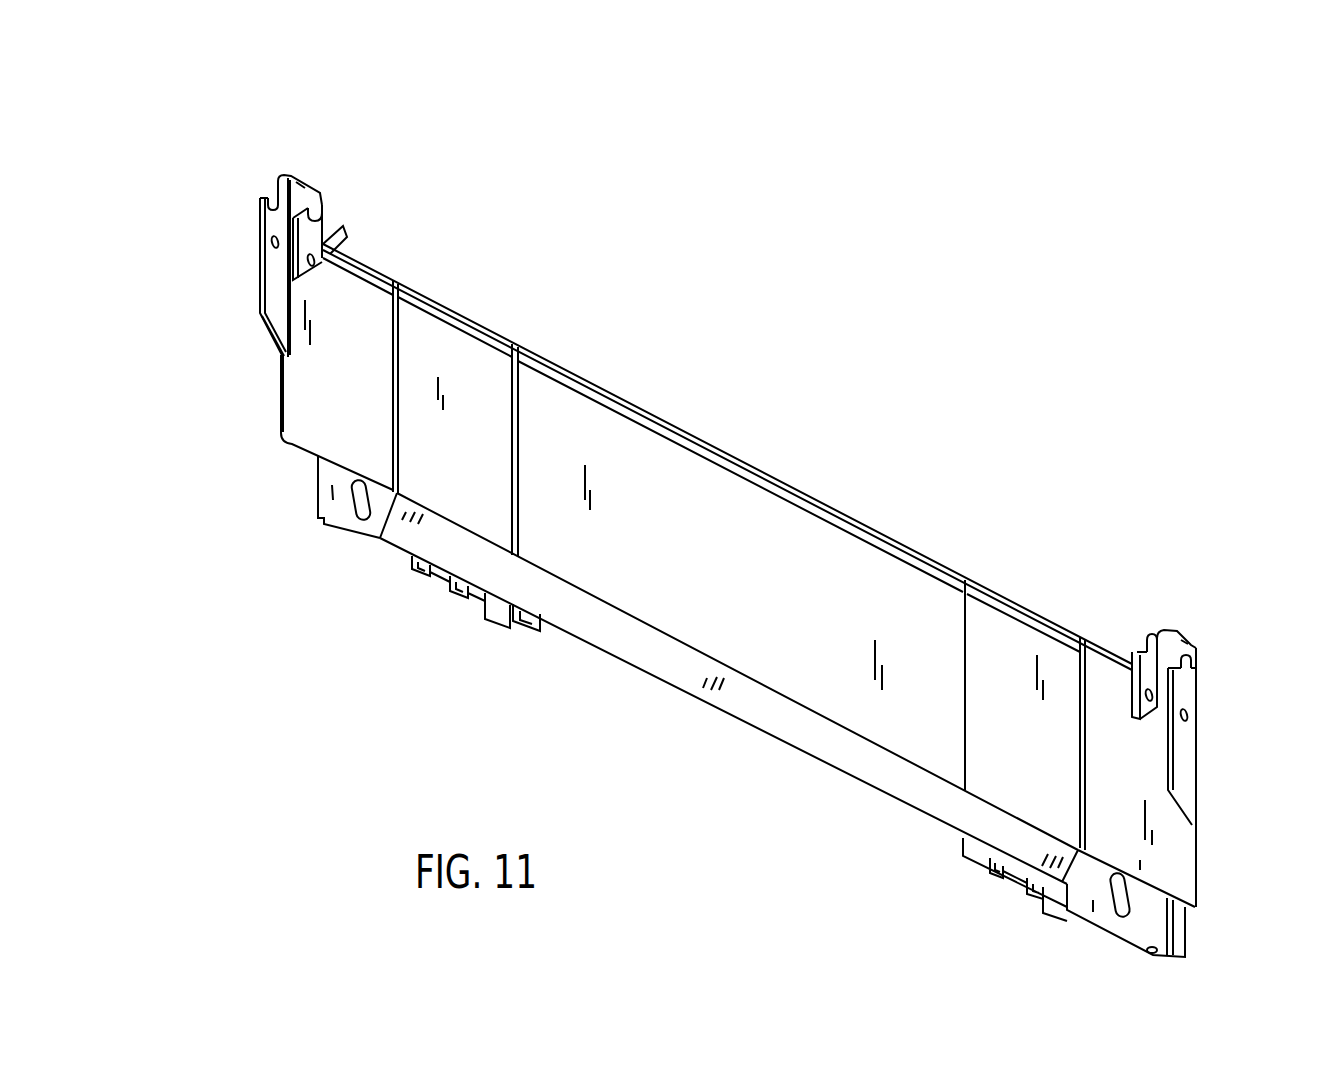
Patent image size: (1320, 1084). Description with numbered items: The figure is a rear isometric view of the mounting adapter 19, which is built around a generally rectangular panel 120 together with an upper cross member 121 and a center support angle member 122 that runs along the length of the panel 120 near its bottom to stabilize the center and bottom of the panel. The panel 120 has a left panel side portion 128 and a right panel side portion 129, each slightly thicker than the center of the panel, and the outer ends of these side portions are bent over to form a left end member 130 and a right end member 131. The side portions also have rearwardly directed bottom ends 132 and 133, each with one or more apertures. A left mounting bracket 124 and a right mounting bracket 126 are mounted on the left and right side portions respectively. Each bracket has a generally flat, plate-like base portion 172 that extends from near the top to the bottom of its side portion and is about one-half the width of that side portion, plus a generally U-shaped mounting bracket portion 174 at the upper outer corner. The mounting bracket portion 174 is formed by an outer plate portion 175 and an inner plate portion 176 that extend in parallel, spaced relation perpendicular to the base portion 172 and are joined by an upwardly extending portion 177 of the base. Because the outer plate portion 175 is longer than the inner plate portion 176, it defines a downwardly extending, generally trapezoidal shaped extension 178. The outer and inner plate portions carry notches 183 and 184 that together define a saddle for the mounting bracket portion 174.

The mounting adapter 19 is at (618, 761).
The panel 120 is at (756, 579).
The upper cross member 121 is at (827, 508).
The center support angle member 122 is at (787, 730).
The left mounting bracket 124 is at (301, 389).
The right mounting bracket 126 is at (1166, 852).
The left panel side portion 128 is at (490, 342).
The right panel side portion 129 is at (988, 605).
The left end member 130 is at (343, 242).
The right end member 131 is at (1180, 918).
The bottom end of left panel side portion 132 is at (393, 552).
The bottom end of right panel side portion 133 is at (982, 860).
The base portion 172 is at (363, 398).
The mounting bracket portion 174 is at (297, 173).
The outer plate portion 175 is at (268, 272).
The inner plate portion 176 is at (307, 233).
The upwardly extending portion 177 is at (303, 197).
The trapezoidal shaped extension 178 is at (273, 343).
The notch 183 is at (277, 203).
The notch 184 is at (307, 213).